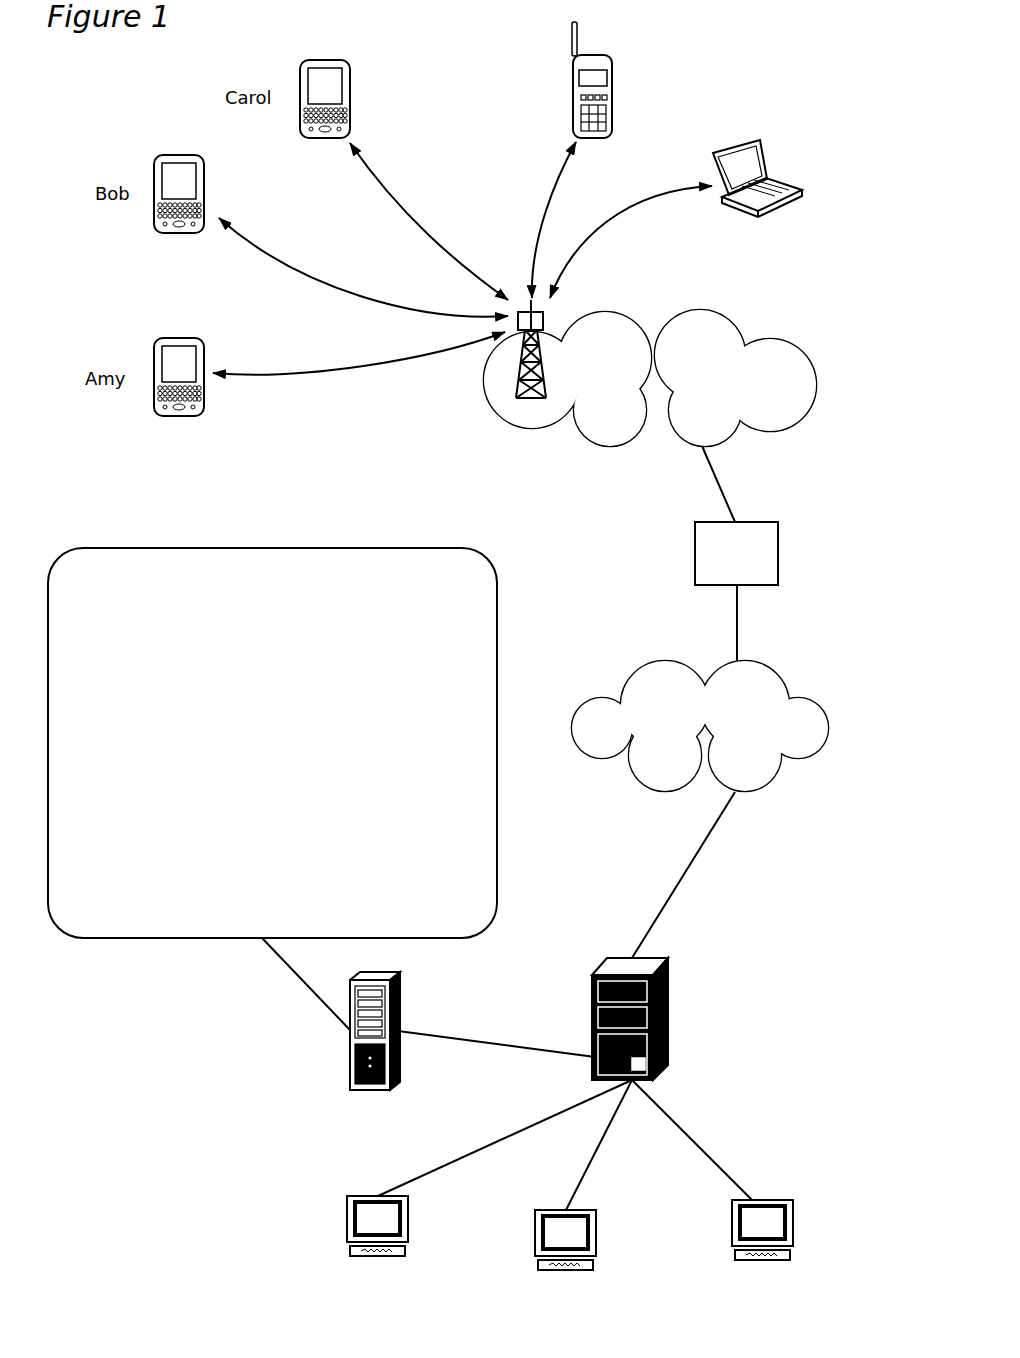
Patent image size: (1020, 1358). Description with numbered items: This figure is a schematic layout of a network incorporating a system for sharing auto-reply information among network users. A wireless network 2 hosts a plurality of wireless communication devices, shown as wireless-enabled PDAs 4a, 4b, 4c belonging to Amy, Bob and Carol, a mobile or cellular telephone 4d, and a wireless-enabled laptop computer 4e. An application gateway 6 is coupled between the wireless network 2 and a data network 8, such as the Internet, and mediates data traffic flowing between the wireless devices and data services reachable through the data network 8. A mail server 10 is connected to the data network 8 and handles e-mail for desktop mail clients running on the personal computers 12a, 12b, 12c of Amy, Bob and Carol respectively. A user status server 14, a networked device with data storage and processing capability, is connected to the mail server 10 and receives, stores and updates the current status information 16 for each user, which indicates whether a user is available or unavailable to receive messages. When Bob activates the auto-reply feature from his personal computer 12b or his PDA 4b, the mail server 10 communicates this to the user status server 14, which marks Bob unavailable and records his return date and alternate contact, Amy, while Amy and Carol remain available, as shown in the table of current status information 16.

The wireless network 2 is at (817, 380).
The wireless-enabled PDA 4a is at (205, 407).
The wireless-enabled PDA 4b is at (173, 236).
The wireless-enabled PDA 4c is at (352, 108).
The mobile or cellular telephone 4d is at (613, 86).
The wireless-enabled laptop computer 4e is at (772, 205).
The application gateway 6 is at (778, 552).
The data network 8 is at (828, 720).
The mail server 10 is at (668, 975).
The personal computer 12a is at (347, 1222).
The personal computer 12b is at (598, 1238).
The personal computer 12c is at (793, 1228).
The user status server 14 is at (350, 1062).
The current status information 16 is at (166, 938).